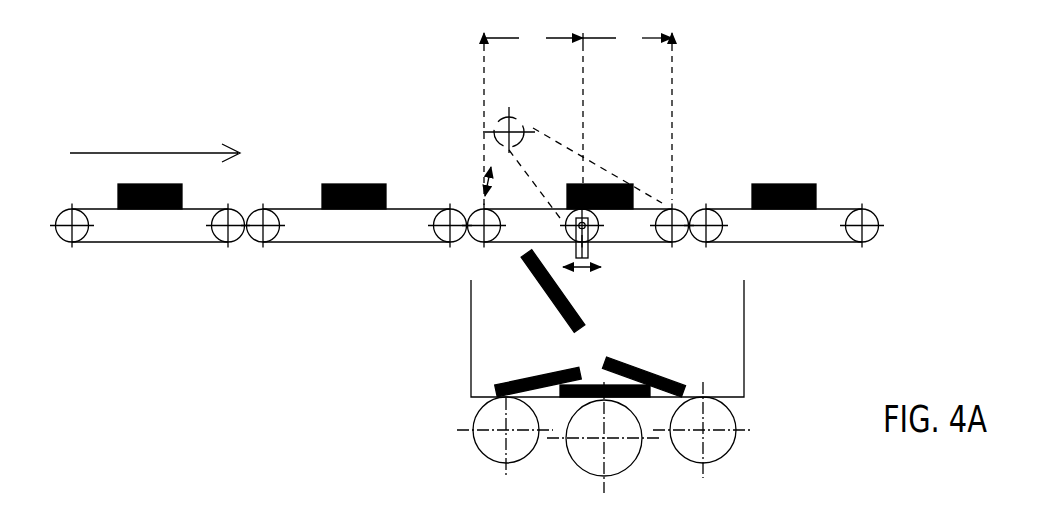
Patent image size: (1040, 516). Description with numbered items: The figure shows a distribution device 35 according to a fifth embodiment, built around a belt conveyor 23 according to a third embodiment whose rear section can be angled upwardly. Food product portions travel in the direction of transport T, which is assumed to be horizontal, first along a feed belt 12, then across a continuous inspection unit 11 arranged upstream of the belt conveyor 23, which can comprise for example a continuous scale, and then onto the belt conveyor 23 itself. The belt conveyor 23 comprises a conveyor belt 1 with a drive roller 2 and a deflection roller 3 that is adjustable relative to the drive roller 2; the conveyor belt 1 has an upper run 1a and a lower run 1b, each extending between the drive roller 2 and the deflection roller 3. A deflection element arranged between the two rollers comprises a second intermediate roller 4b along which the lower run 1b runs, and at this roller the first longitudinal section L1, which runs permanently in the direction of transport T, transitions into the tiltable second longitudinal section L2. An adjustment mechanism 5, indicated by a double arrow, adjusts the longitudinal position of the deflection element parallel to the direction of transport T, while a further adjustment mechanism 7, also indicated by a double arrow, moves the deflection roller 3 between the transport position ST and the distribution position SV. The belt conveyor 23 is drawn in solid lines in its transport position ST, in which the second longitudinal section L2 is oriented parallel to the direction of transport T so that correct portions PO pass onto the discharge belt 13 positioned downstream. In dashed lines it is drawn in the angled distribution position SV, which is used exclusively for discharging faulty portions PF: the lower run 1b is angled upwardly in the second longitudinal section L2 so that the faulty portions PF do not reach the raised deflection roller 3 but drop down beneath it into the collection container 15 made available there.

The conveyor belt 1 is at (559, 205).
The upper run 1a is at (649, 190).
The lower run 1b is at (507, 244).
The drive roller 2 is at (678, 211).
The deflection roller 3 is at (503, 120).
The second intermediate roller 4b is at (598, 233).
The adjustment mechanism 5 is at (582, 271).
The adjustment mechanism 7 is at (486, 181).
The continuous inspection unit 11 is at (353, 252).
The feed belt 12 is at (146, 252).
The discharge belt 13 is at (784, 191).
The collection container 15 is at (635, 323).
The belt conveyor 23 is at (599, 127).
The distribution device 35 is at (791, 176).
The direction of transport T is at (155, 143).
The distribution position SV is at (531, 112).
The transport position ST is at (473, 247).
The correct portions PO is at (764, 184).
The faulty portions PF is at (632, 363).
The first longitudinal section L1 is at (627, 113).
The second longitudinal section L2 is at (533, 116).